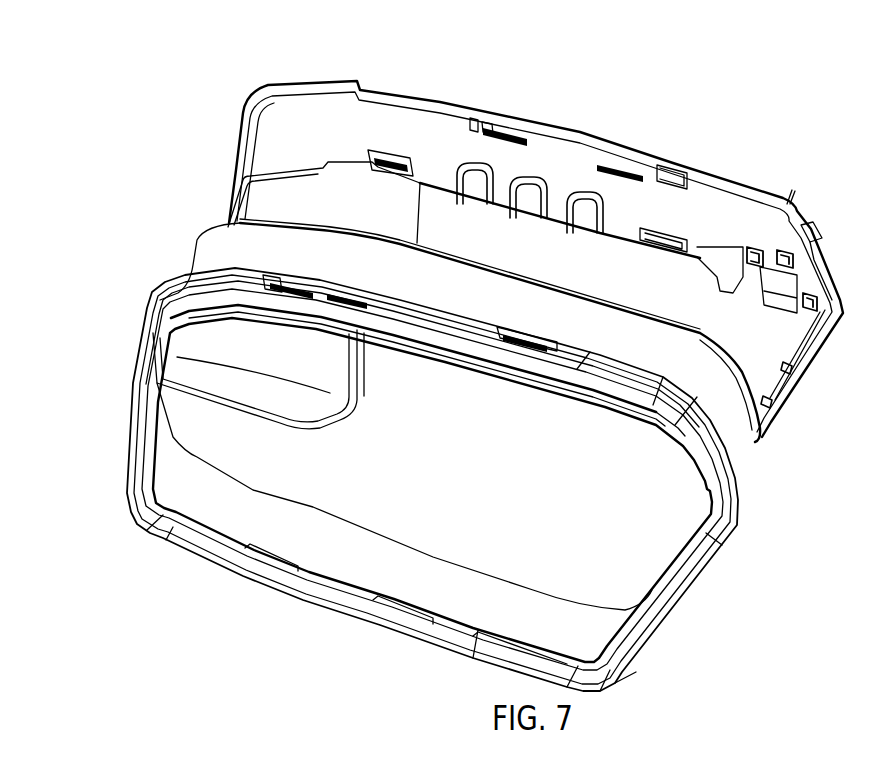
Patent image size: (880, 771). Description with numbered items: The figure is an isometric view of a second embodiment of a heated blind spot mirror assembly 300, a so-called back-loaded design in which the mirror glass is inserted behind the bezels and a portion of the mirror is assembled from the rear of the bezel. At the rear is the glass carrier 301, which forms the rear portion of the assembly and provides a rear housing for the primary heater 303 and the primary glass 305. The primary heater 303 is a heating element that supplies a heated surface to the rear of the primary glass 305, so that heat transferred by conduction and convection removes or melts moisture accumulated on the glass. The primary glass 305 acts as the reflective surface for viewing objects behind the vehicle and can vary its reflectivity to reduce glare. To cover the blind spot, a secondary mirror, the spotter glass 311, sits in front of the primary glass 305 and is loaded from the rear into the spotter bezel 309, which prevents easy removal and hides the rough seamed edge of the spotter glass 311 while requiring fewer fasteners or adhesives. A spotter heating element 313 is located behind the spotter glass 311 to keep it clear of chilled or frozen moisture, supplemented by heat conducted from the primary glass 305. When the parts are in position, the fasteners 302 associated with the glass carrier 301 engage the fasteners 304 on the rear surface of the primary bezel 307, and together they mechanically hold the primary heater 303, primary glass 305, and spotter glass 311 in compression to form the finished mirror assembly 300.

The heated blind spot mirror assembly 300 is at (95, 188).
The glass carrier 301 is at (304, 93).
The fasteners 302 is at (489, 118).
The primary heater 303 is at (635, 268).
The fasteners 304 is at (523, 333).
The primary glass 305 is at (675, 342).
The primary bezel 307 is at (637, 655).
The spotter bezel 309 is at (180, 398).
The spotter glass 311 is at (197, 334).
The spotter heating element 313 is at (257, 200).